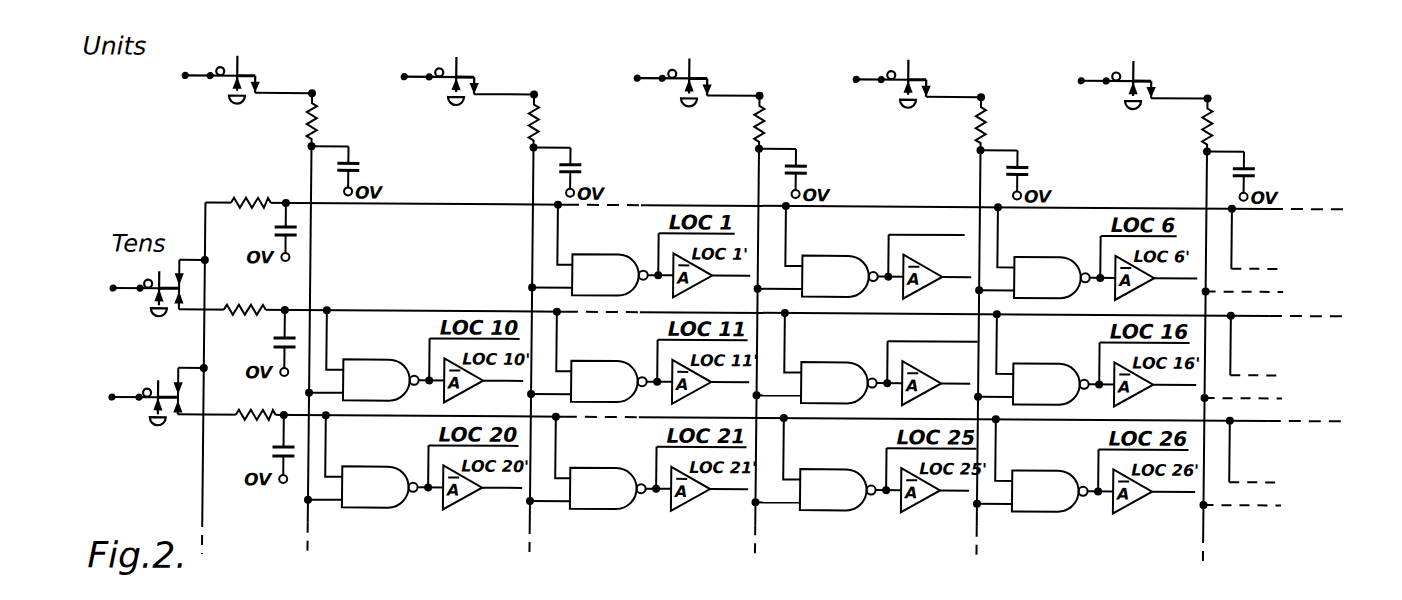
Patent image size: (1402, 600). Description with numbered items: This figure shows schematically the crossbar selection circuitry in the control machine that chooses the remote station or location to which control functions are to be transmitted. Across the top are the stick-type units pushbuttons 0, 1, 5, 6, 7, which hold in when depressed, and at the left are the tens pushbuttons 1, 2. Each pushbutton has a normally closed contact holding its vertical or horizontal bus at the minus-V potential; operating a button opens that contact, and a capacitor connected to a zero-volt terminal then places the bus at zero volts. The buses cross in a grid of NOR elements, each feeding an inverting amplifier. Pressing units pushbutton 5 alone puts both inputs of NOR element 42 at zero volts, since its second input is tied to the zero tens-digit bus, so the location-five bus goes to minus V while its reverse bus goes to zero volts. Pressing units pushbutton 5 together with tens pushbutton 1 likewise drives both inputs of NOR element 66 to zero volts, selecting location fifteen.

The zero tens digit bus 0 is at (264, 120).
The tens pushbutton 1 is at (485, 126).
The units pushbutton 5 is at (714, 127).
The units key switch 6 is at (934, 130).
The units key switch 7 is at (1160, 130).
The tens key switch 2 is at (141, 393).
The NOR element 42 is at (867, 251).
The NOR element 66 is at (870, 358).